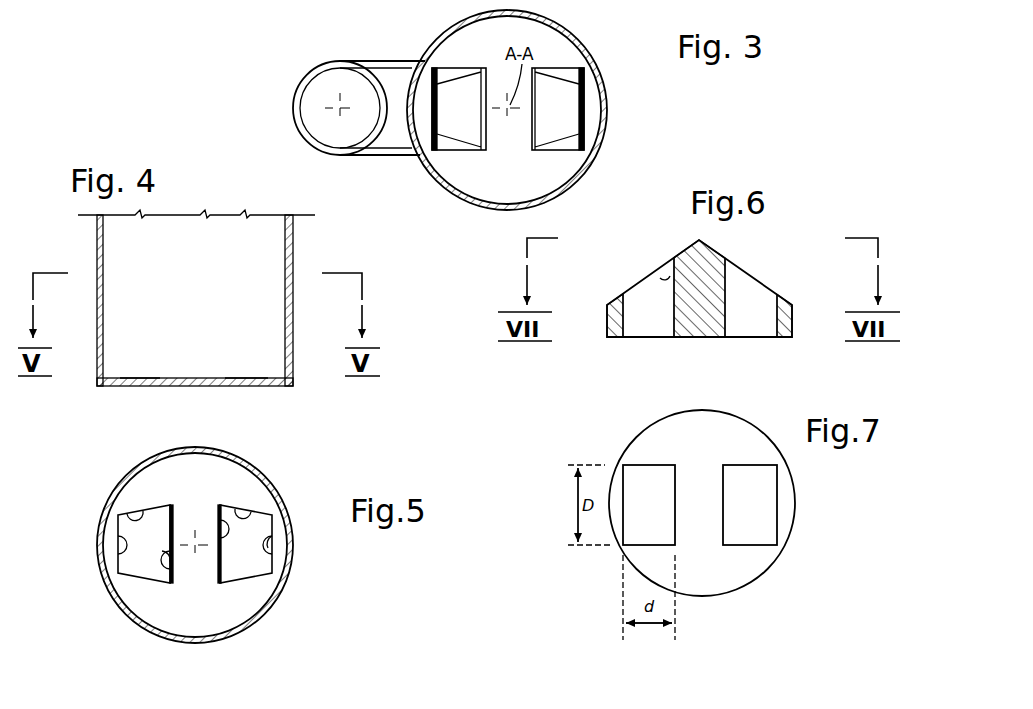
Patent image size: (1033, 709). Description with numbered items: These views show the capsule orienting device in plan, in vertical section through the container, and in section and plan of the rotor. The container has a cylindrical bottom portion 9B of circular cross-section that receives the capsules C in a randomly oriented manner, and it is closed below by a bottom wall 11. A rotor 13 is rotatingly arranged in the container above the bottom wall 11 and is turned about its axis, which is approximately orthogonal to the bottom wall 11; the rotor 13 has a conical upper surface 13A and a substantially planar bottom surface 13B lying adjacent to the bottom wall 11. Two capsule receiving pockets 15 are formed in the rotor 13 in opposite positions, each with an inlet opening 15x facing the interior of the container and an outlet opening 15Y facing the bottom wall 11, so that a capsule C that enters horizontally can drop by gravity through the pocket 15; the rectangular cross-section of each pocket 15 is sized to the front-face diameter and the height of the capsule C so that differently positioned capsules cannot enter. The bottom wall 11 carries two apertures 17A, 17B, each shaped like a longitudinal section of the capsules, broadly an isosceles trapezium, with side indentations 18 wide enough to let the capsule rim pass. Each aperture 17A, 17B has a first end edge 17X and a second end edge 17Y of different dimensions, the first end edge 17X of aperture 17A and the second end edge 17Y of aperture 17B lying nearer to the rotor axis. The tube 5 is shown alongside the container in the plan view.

In FIG. 3, the tube 5 is at (318, 115).
In FIG. 3, the cylindrical bottom portion 9B is at (587, 46).
In FIG. 4, the cylindrical bottom portion 9B is at (298, 272).
In FIG. 5, the cylindrical bottom portion 9B is at (290, 590).
In FIG. 4, the bottom wall 11 is at (196, 378).
In FIG. 5, the bottom wall 11 is at (140, 594).
In FIG. 3, the rotor 13 is at (541, 171).
In FIG. 6, the rotor 13 is at (768, 278).
In FIG. 7, the rotor 13 is at (684, 410).
In FIG. 6, the conical upper surface 13A is at (686, 250).
In FIG. 6, the planar bottom surface 13B is at (694, 338).
In FIG. 3, the capsule receiving pocket 15 is at (450, 75).
In FIG. 6, the capsule receiving pocket 15 is at (646, 316).
In FIG. 7, the capsule receiving pocket 15 is at (740, 516).
In FIG. 6, the inlet opening 15x is at (661, 277).
In FIG. 6, the outlet opening 15Y is at (636, 338).
In FIG. 4, the aperture 17A is at (138, 378).
In FIG. 5, the aperture 17A is at (134, 520).
In FIG. 4, the aperture 17B is at (246, 378).
In FIG. 5, the aperture 17B is at (250, 505).
In FIG. 5, the first end edge 17X is at (272, 548).
In FIG. 5, the second end edge 17Y is at (125, 556).
In FIG. 5, the side indentation 18 is at (166, 506).
In FIG. 3, the capsule C is at (572, 105).